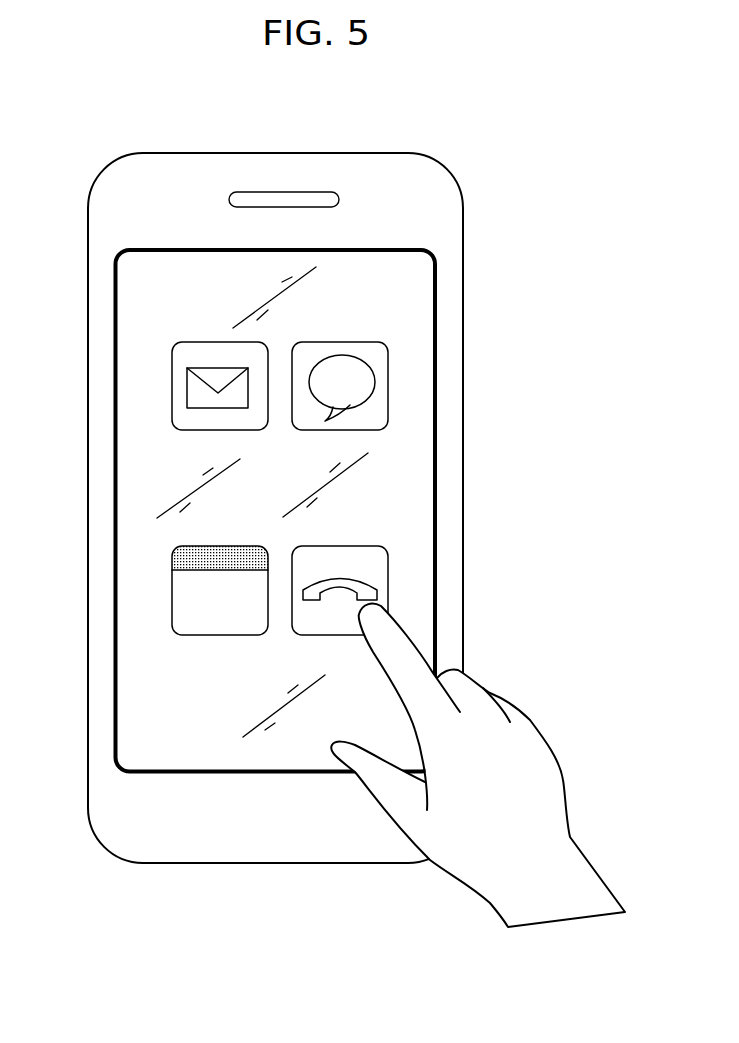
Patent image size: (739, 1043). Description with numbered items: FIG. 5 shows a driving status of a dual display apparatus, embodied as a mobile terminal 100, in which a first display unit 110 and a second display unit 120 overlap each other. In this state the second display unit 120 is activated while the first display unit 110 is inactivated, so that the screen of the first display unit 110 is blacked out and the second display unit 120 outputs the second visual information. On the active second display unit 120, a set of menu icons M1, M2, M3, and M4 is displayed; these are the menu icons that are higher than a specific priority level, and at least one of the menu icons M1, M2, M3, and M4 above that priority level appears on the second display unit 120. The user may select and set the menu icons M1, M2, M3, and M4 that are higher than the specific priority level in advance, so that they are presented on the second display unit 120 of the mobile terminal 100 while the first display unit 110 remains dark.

The mobile terminal 100 is at (522, 127).
The first display unit 110 is at (412, 282).
The second display unit 120 is at (412, 333).
The menu icon M1 is at (182, 418).
The menu icon M2 is at (370, 415).
The menu icon M3 is at (177, 600).
The menu icon M4 is at (377, 565).